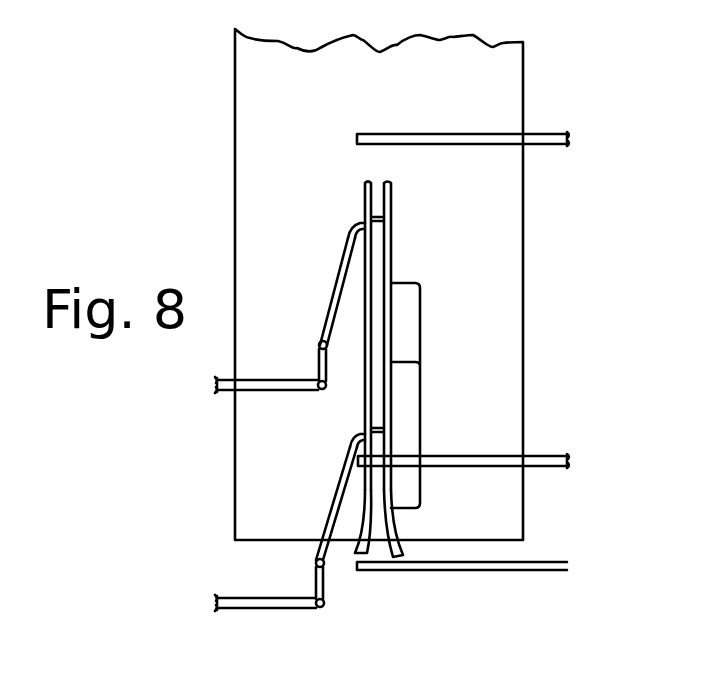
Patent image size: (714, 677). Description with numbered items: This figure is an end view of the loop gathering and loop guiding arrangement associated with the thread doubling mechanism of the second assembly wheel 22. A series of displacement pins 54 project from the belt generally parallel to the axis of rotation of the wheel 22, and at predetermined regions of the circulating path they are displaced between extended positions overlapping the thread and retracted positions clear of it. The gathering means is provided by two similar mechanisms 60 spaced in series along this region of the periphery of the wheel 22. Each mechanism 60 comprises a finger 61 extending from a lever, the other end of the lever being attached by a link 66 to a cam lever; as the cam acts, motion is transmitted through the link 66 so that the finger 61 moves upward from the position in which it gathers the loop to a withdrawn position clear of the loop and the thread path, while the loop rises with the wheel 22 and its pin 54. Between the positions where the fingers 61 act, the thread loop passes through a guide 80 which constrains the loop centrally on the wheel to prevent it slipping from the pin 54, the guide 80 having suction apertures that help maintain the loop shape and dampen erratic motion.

The second assembly wheel 22 is at (246, 92).
The displacement pin 54 is at (545, 137).
The gathering mechanism 60 is at (226, 413).
The finger 61 is at (345, 240).
The link 66 is at (266, 464).
The loop guide 80 is at (388, 243).